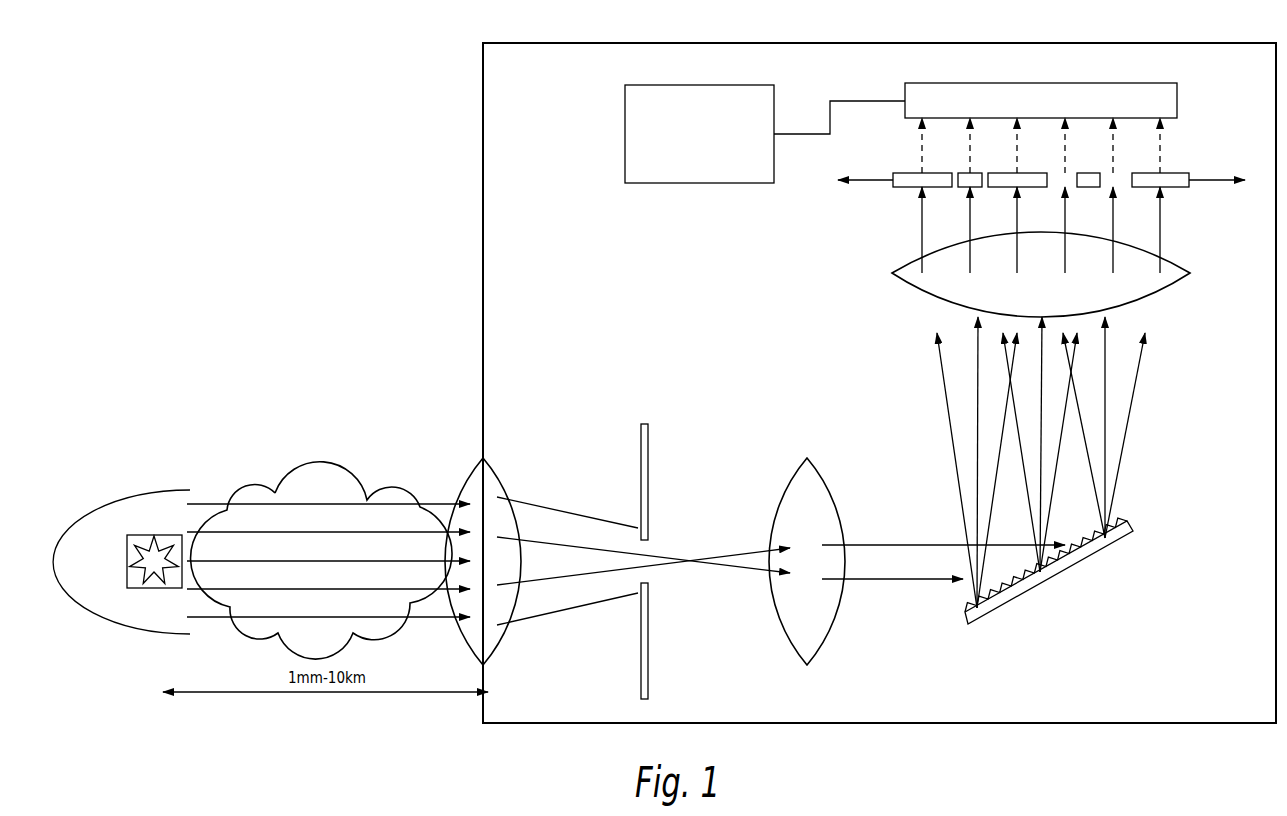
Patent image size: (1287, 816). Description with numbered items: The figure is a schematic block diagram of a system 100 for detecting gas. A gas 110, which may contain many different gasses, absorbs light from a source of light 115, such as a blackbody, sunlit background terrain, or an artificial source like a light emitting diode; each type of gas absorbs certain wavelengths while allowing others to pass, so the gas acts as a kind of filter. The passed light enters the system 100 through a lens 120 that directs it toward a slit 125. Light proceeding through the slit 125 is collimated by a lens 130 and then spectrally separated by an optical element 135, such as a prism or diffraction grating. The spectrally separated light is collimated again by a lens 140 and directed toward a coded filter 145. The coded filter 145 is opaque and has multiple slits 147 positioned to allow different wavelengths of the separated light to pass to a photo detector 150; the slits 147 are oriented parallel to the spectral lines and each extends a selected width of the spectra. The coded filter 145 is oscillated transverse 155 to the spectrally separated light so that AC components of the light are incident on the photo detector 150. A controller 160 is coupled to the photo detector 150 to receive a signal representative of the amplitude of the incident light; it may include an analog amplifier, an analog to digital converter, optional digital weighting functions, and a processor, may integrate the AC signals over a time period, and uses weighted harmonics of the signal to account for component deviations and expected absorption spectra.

The system for detecting gas 100 is at (880, 43).
The gas 110 is at (253, 487).
The source of light 115 is at (127, 565).
The lens 120 is at (462, 481).
The slit 125 is at (650, 575).
The lens 130 is at (790, 478).
The optical element 135 is at (1050, 580).
The lens 140 is at (1145, 297).
The coded filter 145 is at (1175, 187).
The slits 147 is at (980, 187).
The photo detector 150 is at (1038, 83).
The transverse oscillation 155 is at (865, 177).
The controller 160 is at (753, 85).